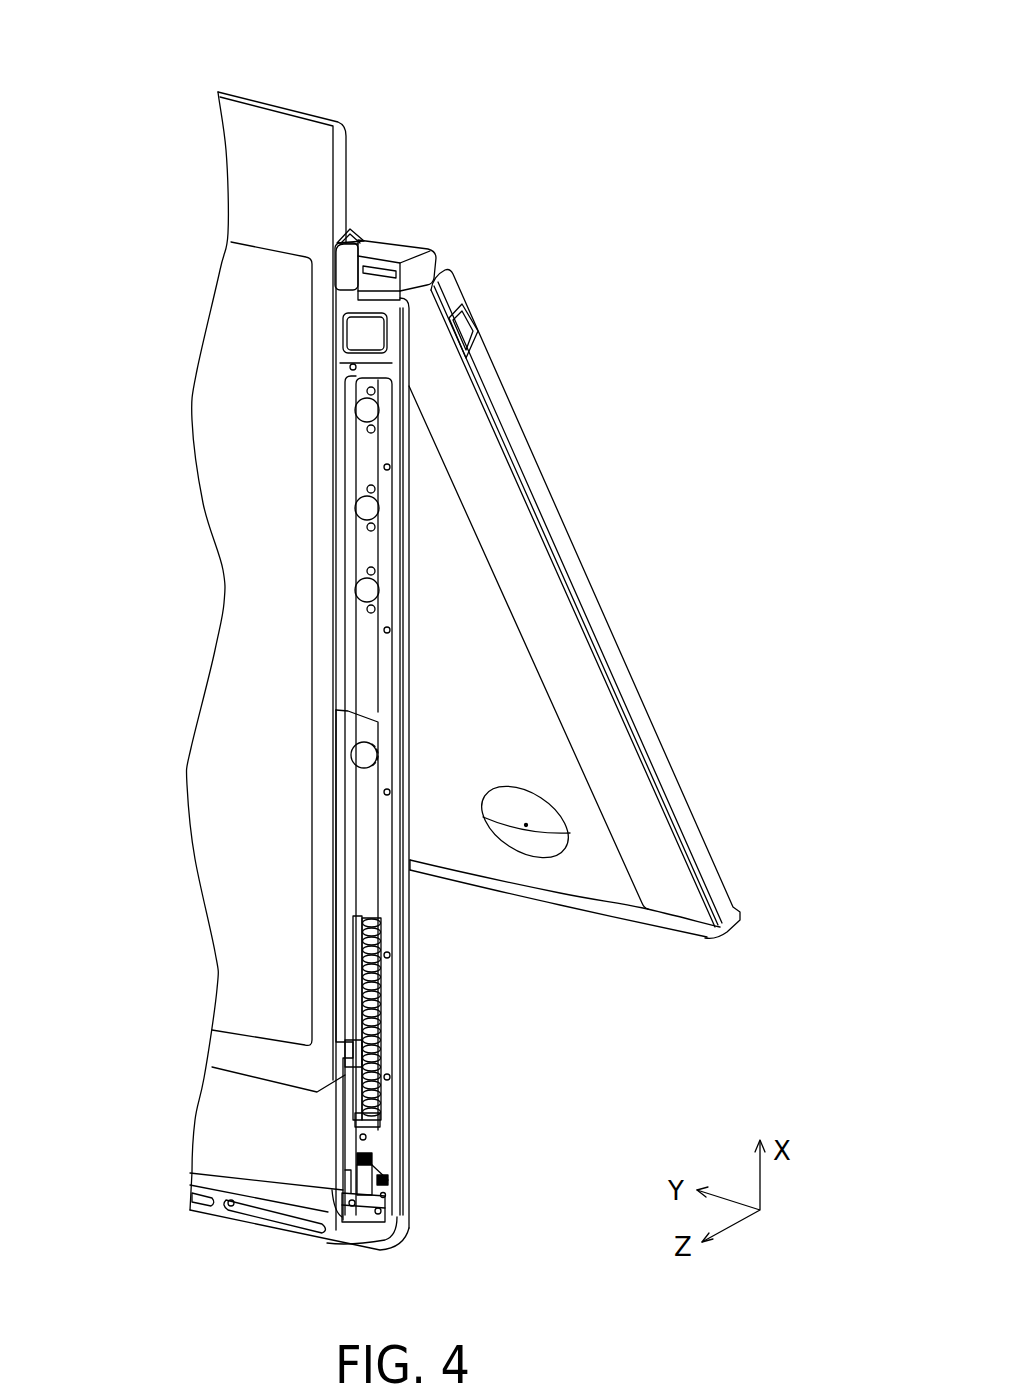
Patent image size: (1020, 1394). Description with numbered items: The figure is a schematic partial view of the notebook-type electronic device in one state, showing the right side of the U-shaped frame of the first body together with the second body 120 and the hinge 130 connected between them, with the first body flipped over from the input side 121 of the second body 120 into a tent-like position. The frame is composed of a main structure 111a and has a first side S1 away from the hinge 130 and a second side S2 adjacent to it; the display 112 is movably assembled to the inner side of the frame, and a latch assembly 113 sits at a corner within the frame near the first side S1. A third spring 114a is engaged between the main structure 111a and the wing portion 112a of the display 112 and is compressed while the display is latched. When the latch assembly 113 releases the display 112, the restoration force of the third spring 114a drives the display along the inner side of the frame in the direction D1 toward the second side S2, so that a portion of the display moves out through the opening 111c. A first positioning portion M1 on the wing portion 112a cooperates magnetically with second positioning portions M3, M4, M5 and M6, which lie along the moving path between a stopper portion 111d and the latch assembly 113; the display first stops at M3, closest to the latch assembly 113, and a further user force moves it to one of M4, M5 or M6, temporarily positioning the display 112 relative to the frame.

The display 112 is at (252, 135).
The wing portion 112a is at (356, 844).
The main structure 111a is at (405, 1137).
The opening 111c is at (347, 243).
The stopper portion 111d is at (352, 378).
The latch assembly 113 is at (350, 1255).
The third spring 114a is at (382, 985).
The second body 120 is at (584, 882).
The input side 121 is at (583, 567).
The hinge 130 is at (404, 250).
The first positioning portion M1 is at (350, 750).
The second positioning portion M3 is at (380, 745).
The second positioning portion M4 is at (365, 590).
The second positioning portion M5 is at (365, 508).
The second positioning portion M6 is at (355, 412).
The first side S1 is at (245, 1250).
The second side S2 is at (384, 97).
The direction D1 is at (305, 32).